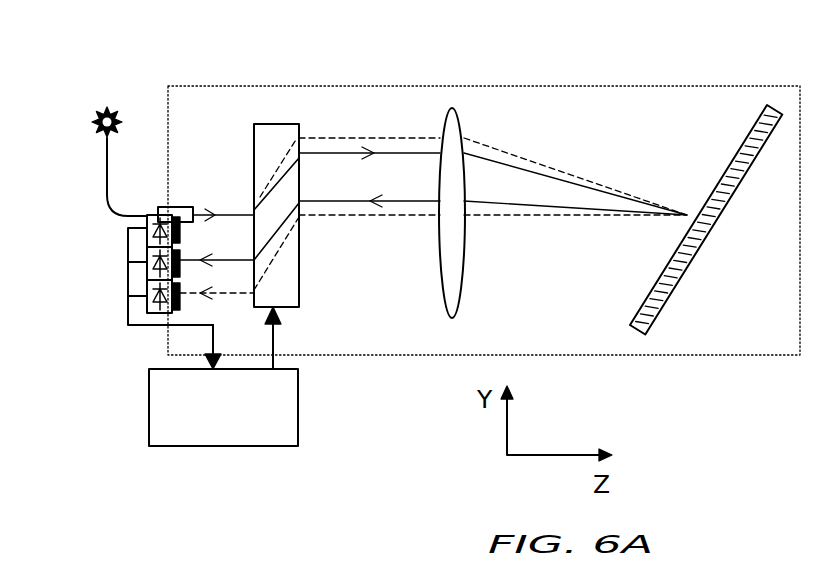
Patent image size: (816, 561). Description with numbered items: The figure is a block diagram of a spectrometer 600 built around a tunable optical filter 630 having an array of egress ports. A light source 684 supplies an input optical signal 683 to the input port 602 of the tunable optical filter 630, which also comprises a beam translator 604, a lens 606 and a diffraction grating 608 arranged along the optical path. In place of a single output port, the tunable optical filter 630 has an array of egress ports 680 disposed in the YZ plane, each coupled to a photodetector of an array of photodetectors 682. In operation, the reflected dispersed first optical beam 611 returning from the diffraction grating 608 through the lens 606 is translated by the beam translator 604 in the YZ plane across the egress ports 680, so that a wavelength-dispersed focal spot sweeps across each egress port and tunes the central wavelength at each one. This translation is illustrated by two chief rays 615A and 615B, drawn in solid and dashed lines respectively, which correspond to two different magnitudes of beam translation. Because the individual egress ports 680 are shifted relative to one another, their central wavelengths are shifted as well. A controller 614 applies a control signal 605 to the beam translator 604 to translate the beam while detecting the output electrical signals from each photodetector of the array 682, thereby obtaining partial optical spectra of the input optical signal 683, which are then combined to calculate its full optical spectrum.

The spectrometer 600 is at (608, 41).
The input port 602 is at (174, 207).
The beam translator 604 is at (254, 152).
The control signal 605 is at (272, 340).
The lens 606 is at (463, 283).
The diffraction grating 608 is at (727, 205).
The reflected dispersed first optical beam 611 is at (565, 229).
The controller 614 is at (242, 422).
The first chief ray 615A is at (397, 153).
The second chief ray 615B is at (396, 217).
The tunable optical filter 630 is at (778, 329).
The array of egress ports 680 is at (172, 313).
The array of photodetectors 682 is at (118, 266).
The input optical signal 683 is at (107, 190).
The light source 684 is at (94, 122).